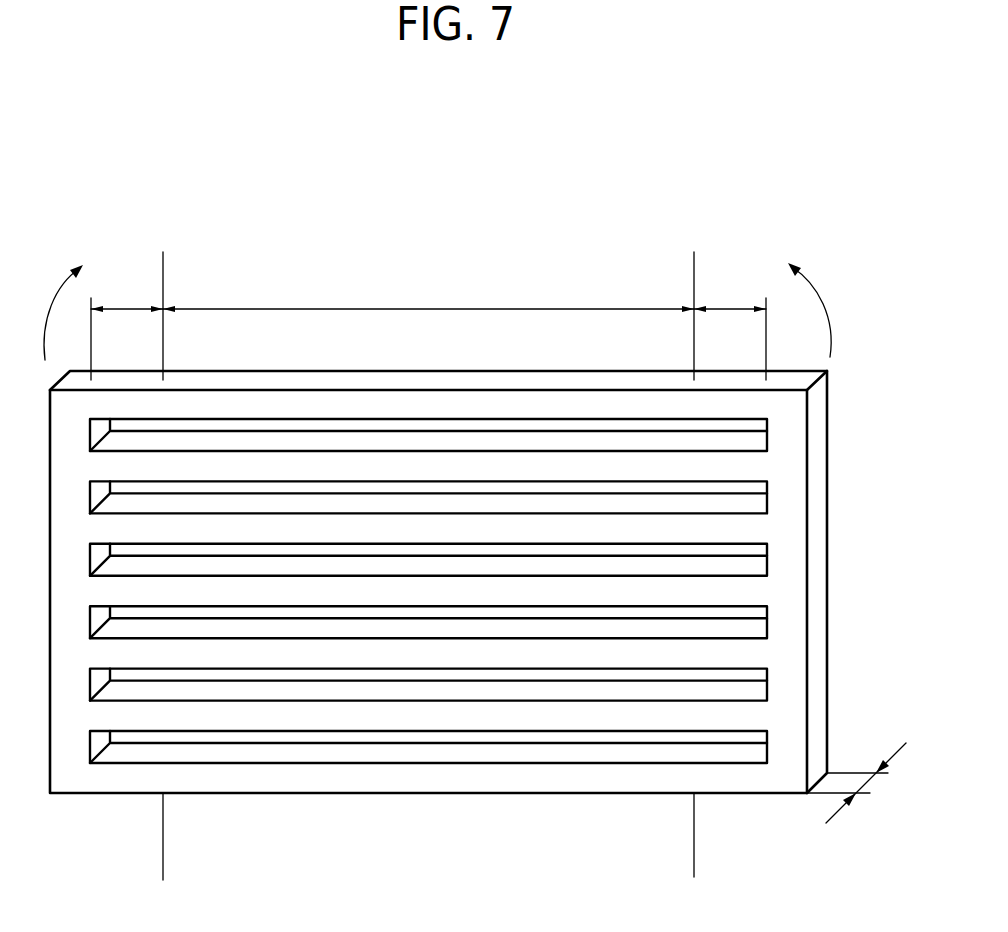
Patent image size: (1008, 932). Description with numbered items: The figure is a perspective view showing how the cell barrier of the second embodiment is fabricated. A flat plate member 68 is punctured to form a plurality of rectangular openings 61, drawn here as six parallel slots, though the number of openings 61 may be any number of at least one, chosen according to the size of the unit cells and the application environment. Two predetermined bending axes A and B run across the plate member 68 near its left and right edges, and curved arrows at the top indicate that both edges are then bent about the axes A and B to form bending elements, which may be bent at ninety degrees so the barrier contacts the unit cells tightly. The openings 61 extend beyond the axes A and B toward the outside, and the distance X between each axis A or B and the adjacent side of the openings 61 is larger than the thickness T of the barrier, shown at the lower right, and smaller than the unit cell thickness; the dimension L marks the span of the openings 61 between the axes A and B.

The rectangular openings 61 is at (282, 427).
The plate member 68 is at (442, 782).
The axis A is at (163, 567).
The axis B is at (694, 566).
The distance X is at (428, 329).
The slot length L is at (428, 293).
The thickness T is at (856, 783).